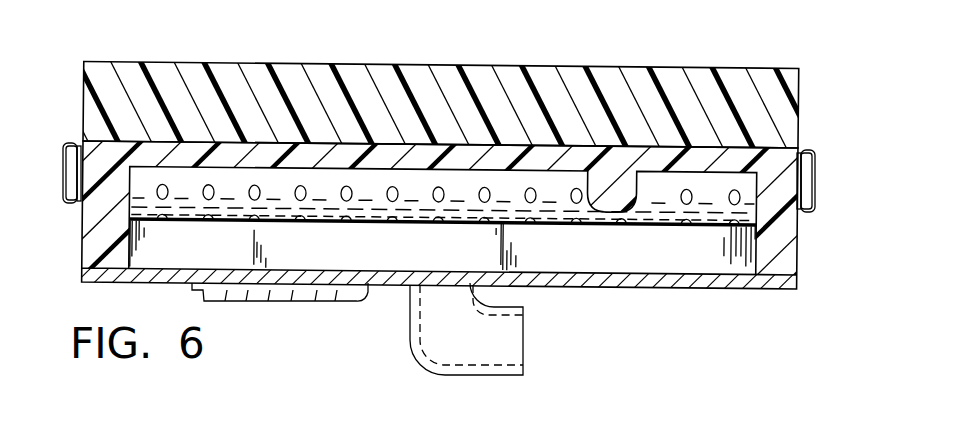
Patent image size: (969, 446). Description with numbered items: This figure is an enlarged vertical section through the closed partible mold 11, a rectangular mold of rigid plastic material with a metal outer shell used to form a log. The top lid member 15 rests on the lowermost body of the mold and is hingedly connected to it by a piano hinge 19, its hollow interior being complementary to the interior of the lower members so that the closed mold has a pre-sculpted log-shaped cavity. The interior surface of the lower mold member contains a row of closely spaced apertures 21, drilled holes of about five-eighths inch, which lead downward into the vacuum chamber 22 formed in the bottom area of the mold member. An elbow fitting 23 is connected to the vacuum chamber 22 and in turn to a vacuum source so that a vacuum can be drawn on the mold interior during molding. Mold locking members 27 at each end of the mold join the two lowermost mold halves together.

The partible mold 11 is at (770, 64).
The top lid member 15 is at (485, 97).
The piano hinge 19 is at (282, 302).
The apertures 21 is at (440, 222).
The vacuum chamber 22 is at (667, 252).
The elbow fitting 23 is at (507, 345).
The mold locking members 27 is at (63, 160).